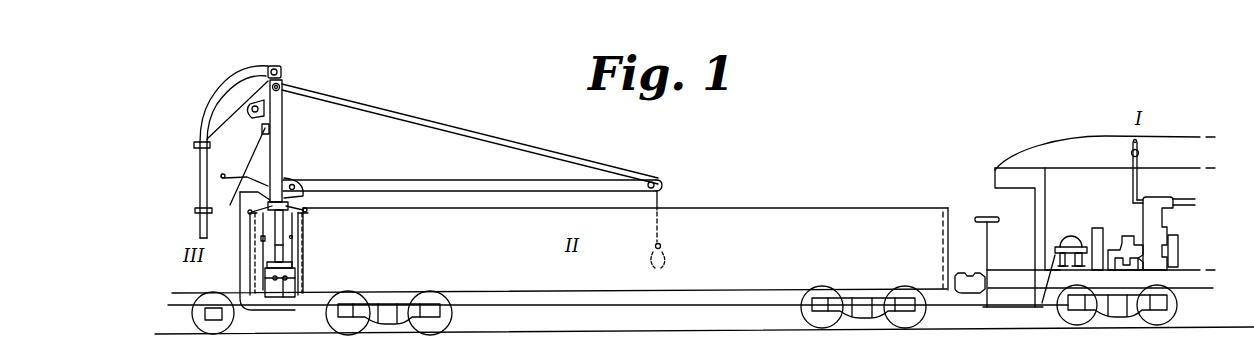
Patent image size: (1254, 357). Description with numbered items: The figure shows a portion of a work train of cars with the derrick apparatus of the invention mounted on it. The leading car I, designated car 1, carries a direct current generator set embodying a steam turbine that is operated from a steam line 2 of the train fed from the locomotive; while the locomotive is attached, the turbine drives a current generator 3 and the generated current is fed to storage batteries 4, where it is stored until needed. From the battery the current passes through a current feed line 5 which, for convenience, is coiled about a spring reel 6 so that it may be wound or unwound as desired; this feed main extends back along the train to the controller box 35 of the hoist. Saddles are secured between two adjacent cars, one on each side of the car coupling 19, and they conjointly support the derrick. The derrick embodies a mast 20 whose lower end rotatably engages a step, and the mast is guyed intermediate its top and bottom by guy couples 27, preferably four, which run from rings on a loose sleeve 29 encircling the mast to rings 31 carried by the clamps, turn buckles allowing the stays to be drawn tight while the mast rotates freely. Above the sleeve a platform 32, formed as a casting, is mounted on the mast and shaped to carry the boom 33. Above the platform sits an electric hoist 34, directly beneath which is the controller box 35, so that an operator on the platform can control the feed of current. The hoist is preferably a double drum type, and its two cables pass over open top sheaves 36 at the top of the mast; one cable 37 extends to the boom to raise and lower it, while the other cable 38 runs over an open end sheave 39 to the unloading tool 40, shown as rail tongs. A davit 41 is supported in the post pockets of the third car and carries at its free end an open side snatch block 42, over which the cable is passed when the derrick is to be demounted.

The boiler 1 is at (1162, 195).
The steam line 2 is at (1183, 200).
The current generator 3 is at (1130, 236).
The storage batteries 4 is at (1102, 228).
The current feed line 5 is at (752, 313).
The spring reel 6 is at (1058, 244).
The car coupling 19 is at (290, 297).
The mast 20 is at (283, 135).
The guy couples 27 is at (301, 190).
The loose sleeve 29 is at (303, 224).
The rings 31 is at (307, 209).
The platform 32 is at (222, 176).
The boom 33 is at (455, 164).
The electric hoist 34 is at (252, 113).
The controller box 35 is at (262, 131).
The open top sheaves 36 is at (283, 90).
The cable 37 is at (496, 150).
The cable 38 is at (545, 145).
The open end sheave 39 is at (647, 190).
The unloading tool 40 is at (666, 250).
The davit 41 is at (208, 99).
The open side snatch block 42 is at (277, 66).